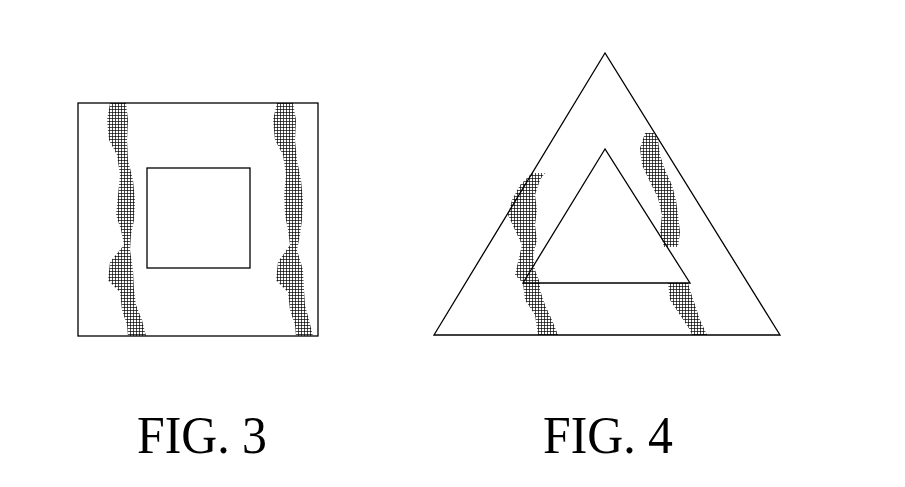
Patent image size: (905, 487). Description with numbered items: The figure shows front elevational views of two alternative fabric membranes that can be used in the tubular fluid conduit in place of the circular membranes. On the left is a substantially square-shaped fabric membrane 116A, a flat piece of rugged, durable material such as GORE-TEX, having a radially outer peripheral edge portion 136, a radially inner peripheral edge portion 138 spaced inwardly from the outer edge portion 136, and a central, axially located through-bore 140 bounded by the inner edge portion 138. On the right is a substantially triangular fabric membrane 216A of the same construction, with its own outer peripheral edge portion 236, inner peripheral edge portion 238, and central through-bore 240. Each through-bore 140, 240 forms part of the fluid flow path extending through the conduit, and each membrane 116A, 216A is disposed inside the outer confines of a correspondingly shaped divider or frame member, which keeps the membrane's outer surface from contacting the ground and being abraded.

In FIG. 3, the fabric membrane 116A is at (263, 118).
In FIG. 3, the radially outer peripheral edge portion 136 is at (118, 113).
In FIG. 3, the radially inner peripheral edge portion 138 is at (213, 267).
In FIG. 3, the central through-bore 140 is at (163, 234).
In FIG. 4, the fabric membrane 216A is at (685, 202).
In FIG. 4, the radially outer peripheral edge portion 236 is at (550, 140).
In FIG. 4, the radially inner peripheral edge portion 238 is at (553, 237).
In FIG. 4, the central through-bore 240 is at (650, 260).